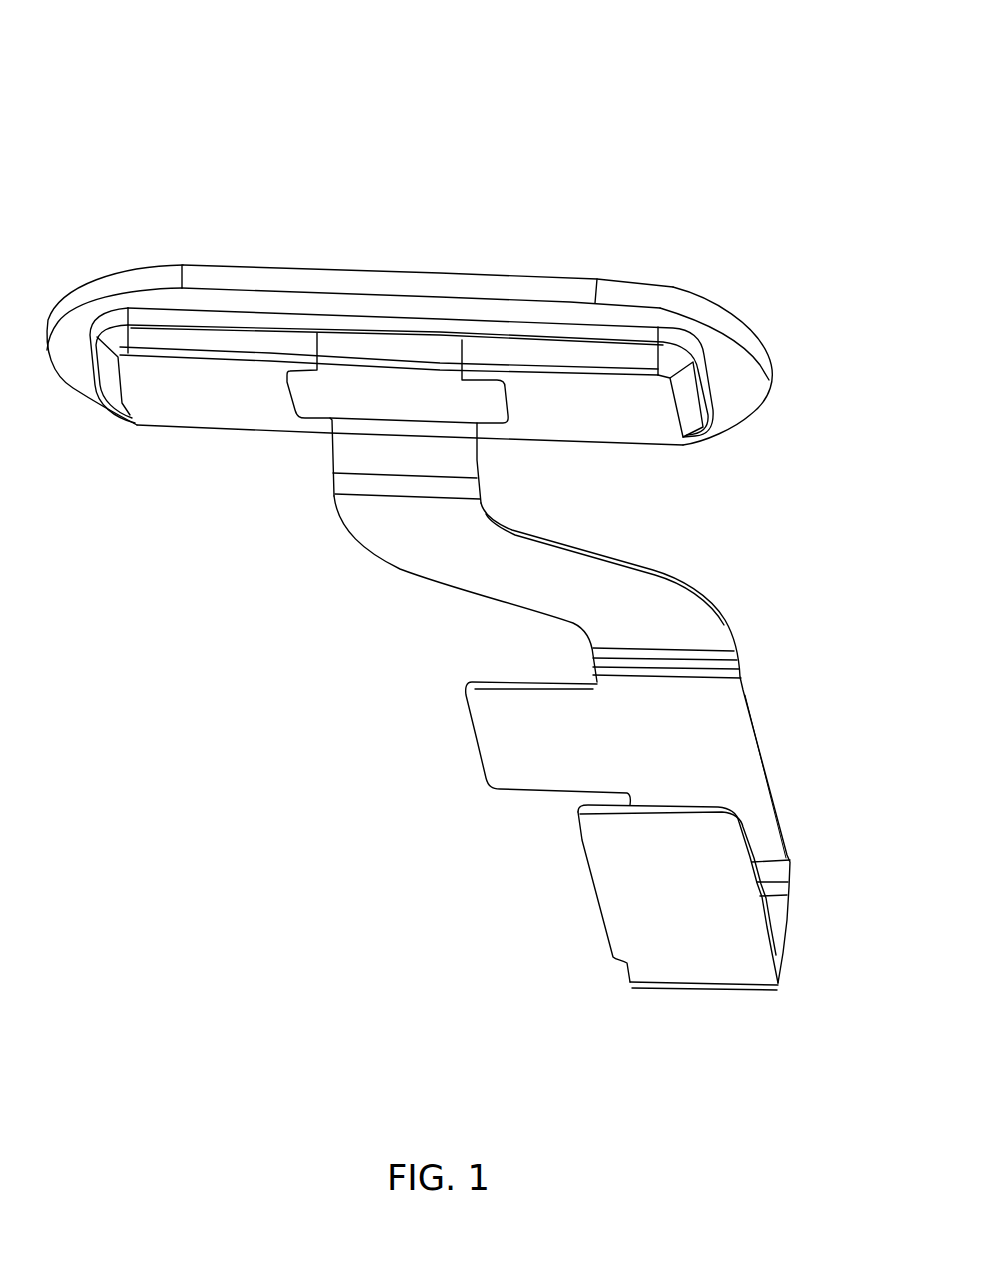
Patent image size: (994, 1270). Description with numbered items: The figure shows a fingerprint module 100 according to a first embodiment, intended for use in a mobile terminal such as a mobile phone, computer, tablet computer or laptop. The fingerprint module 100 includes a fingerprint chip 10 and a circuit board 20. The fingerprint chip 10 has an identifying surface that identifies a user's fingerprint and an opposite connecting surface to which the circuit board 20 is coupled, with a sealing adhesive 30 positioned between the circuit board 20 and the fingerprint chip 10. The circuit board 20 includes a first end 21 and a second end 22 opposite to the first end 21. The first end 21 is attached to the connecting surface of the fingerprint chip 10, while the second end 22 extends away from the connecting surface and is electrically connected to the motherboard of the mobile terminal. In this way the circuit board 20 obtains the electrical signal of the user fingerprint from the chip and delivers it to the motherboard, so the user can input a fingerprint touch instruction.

The fingerprint module 100 is at (540, 140).
The fingerprint chip 10 is at (253, 277).
The circuit board 20 is at (583, 403).
The first end 21 is at (205, 426).
The second end 22 is at (537, 928).
The sealing adhesive 30 is at (167, 343).